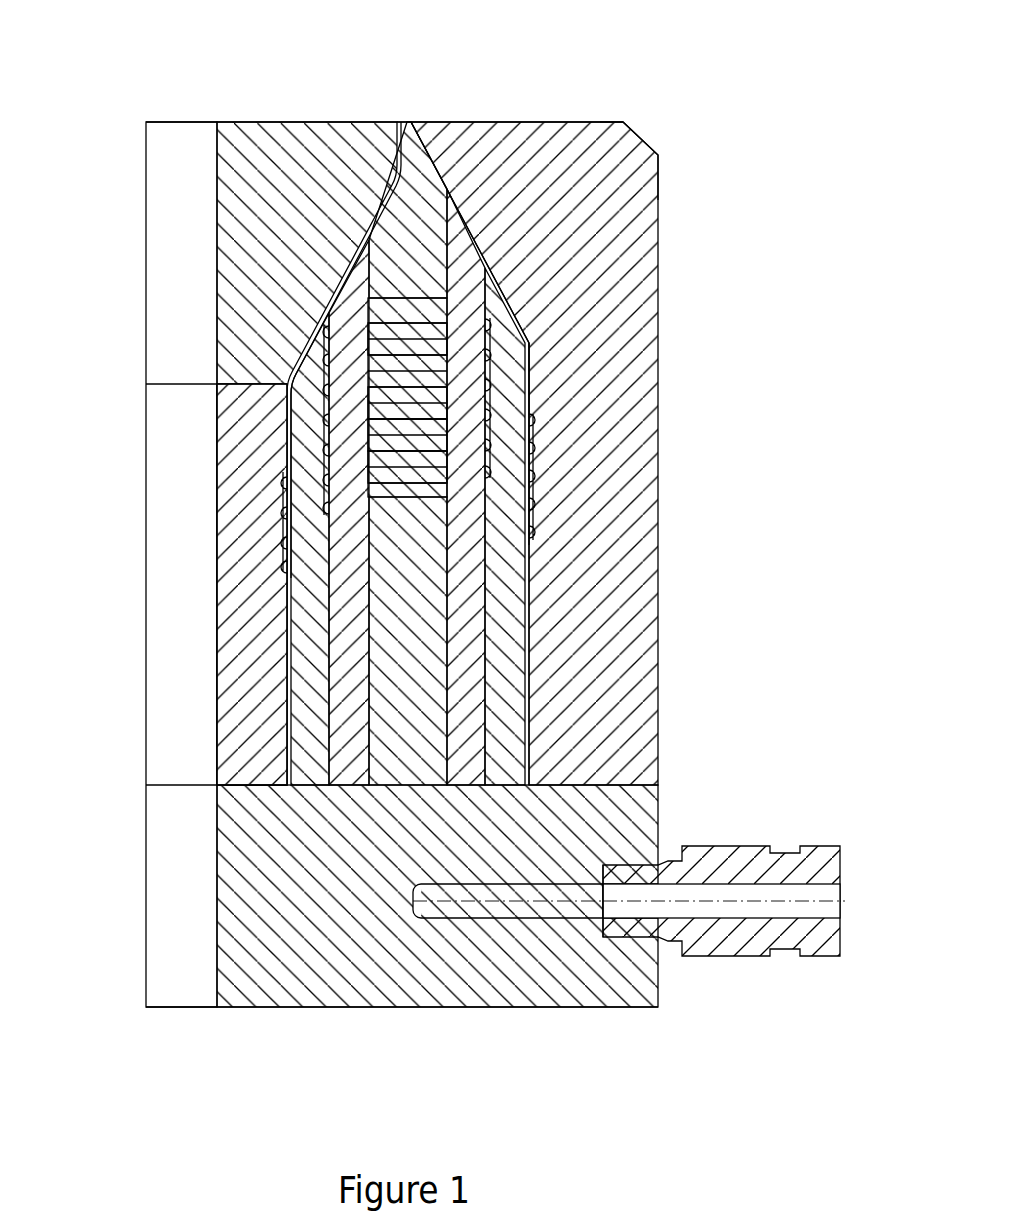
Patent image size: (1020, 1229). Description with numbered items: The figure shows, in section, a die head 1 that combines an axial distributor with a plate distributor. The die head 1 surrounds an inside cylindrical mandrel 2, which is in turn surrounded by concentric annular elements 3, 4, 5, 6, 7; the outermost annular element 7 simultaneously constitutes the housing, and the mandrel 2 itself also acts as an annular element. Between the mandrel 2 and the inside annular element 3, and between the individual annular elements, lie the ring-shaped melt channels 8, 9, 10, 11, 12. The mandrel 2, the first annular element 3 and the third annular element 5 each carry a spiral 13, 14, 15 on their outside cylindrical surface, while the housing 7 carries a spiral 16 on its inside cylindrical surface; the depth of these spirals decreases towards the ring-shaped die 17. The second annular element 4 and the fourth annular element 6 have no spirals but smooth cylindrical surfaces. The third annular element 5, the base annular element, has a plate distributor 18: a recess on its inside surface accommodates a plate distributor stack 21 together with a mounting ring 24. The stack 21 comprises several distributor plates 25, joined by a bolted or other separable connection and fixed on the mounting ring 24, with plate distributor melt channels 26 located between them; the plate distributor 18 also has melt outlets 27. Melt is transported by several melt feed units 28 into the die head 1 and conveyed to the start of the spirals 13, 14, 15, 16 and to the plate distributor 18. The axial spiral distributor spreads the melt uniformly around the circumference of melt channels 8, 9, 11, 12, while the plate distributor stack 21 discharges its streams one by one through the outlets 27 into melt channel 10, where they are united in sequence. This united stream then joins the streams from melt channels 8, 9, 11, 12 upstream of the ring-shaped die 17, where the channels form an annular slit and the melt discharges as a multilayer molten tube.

The die head 1 is at (409, 1040).
The mandrel 2 is at (252, 730).
The first annular element 3 is at (310, 677).
The second annular element 4 is at (347, 615).
The third annular element 5 is at (627, 122).
The fourth annular element 6 is at (507, 613).
The sixth annular element 7 is at (588, 675).
The melt channel 8 is at (288, 393).
The melt channel 9 is at (328, 325).
The melt channel 10 is at (175, 121).
The melt channel 11 is at (560, 242).
The melt channel 12 is at (513, 320).
The spiral 13 is at (285, 512).
The spiral 14 is at (325, 452).
The spiral 15 is at (482, 473).
The spiral 16 is at (532, 533).
The ring-shaped die 17 is at (405, 132).
The plate distributor 18 is at (485, 300).
The plate distributor stack 21 is at (410, 410).
The mounting ring 24 is at (413, 752).
The distributor plates 25 is at (410, 427).
The plate distributor melt channels 26 is at (410, 442).
The melt outlets 27 is at (418, 453).
The melt feed units 28 is at (705, 862).